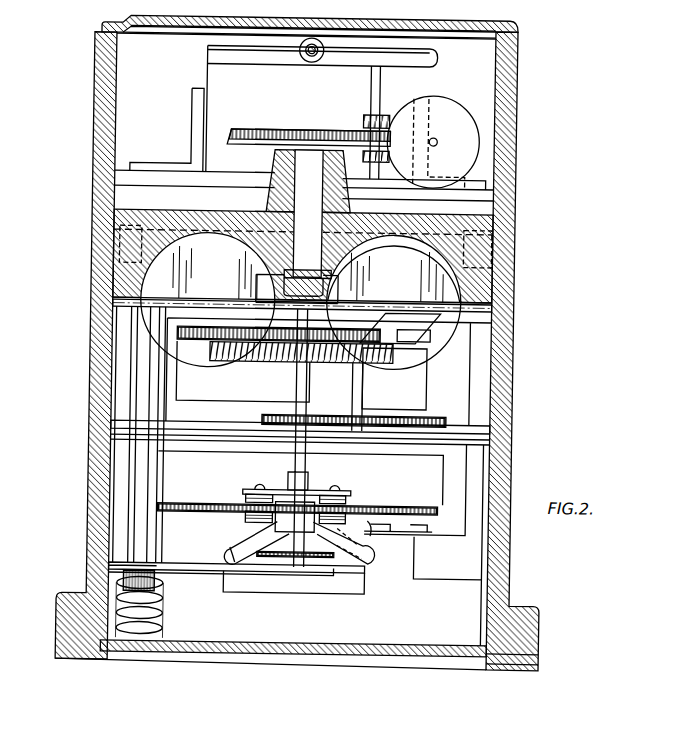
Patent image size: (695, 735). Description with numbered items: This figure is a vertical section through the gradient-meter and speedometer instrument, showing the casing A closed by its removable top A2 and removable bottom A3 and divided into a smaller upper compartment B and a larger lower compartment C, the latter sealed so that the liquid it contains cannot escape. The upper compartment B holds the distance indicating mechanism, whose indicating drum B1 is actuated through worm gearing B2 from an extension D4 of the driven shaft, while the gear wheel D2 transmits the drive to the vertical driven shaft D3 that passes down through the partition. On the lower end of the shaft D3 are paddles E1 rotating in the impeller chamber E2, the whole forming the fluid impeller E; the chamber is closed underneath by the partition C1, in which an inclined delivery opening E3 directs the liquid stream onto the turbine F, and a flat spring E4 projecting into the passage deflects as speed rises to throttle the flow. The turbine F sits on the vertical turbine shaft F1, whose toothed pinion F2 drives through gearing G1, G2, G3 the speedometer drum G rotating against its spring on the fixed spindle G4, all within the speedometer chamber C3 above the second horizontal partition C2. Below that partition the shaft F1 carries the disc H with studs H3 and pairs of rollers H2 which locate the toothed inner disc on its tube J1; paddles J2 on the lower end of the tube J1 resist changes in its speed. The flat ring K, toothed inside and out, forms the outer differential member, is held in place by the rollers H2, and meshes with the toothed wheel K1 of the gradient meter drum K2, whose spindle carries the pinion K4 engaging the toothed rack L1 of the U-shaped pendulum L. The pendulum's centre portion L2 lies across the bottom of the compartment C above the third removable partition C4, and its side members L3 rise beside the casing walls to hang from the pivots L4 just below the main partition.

The casing A is at (512, 152).
The top of the casing A2 is at (488, 25).
The bottom of the casing A3 is at (404, 648).
The upper compartment B is at (478, 76).
The indicating drum B1 is at (217, 72).
The worm gearing B2 is at (365, 119).
The lower compartment C is at (458, 623).
The partition C1 is at (465, 322).
The second horizontal partition C2 is at (485, 455).
The speedometer chamber C3 is at (417, 397).
The third removable partition C4 is at (192, 570).
The gear wheel D2 is at (265, 128).
The vertical driven shaft D3 is at (300, 173).
The extension of the driven shaft D4 is at (307, 63).
The fluid impeller E is at (358, 265).
The paddles E1 is at (425, 262).
The impeller chamber E2 is at (150, 282).
The inclined delivery opening E3 is at (477, 362).
The flat spring E4 is at (255, 290).
The turbine F is at (210, 352).
The turbine shaft F1 is at (302, 368).
The toothed pinion F2 is at (293, 418).
The speedometer drum G is at (450, 422).
The gearing G1 is at (477, 437).
The gearing G2 is at (368, 328).
The gearing G3 is at (200, 322).
The fixed vertical spindle G4 is at (495, 298).
The disc H is at (296, 492).
The rollers H2 is at (323, 520).
The studs H3 is at (342, 488).
The tube J1 is at (265, 522).
The vanes or paddles J2 is at (300, 535).
The flat ring K is at (367, 506).
The toothed wheel K1 is at (168, 498).
The gradient meter drum K2 is at (175, 452).
The pinion K4 is at (305, 560).
The pendulum member L is at (455, 560).
The toothed rack L1 is at (365, 555).
The centre portion L2 is at (208, 615).
The side members L3 is at (457, 373).
The pivots L4 is at (480, 270).